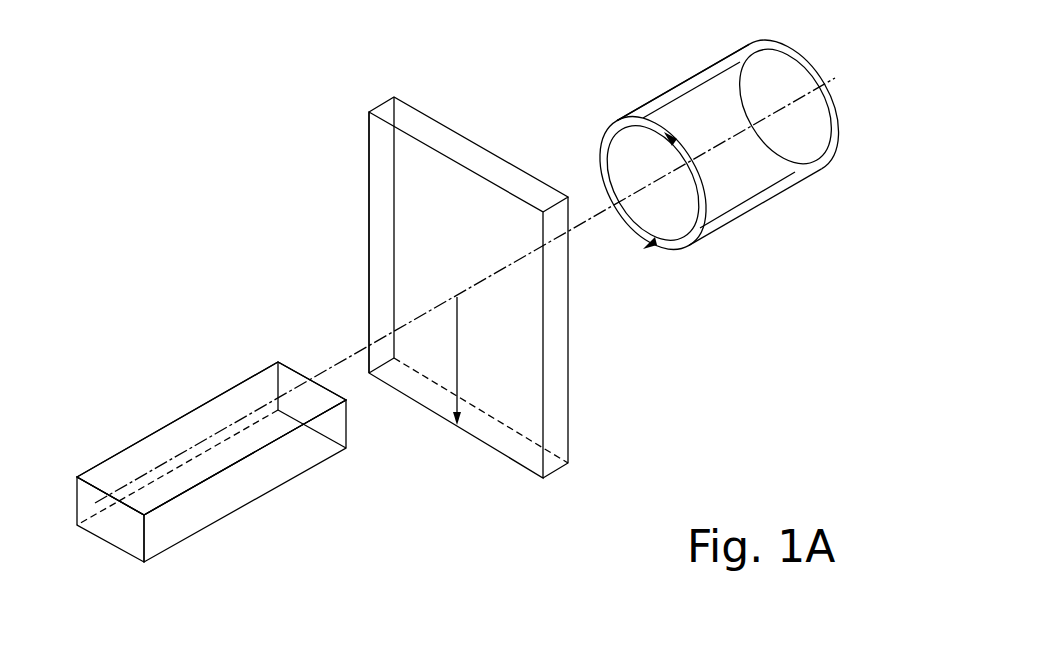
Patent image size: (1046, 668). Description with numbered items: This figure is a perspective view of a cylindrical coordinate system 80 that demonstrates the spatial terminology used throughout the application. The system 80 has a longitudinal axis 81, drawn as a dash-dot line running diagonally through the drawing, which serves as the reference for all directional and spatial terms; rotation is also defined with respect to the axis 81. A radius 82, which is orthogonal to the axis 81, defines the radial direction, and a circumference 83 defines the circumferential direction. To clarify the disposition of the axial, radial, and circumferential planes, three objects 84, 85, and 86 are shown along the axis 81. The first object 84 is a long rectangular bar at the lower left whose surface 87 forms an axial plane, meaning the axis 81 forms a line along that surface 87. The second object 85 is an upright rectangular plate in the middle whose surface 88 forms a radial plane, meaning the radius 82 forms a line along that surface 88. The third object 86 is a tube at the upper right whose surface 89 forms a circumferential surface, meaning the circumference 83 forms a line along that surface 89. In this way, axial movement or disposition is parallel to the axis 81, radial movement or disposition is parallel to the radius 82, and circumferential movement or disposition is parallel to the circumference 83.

The cylindrical coordinate system 80 is at (318, 155).
The longitudinal axis 81 is at (832, 97).
The radius 82 is at (457, 352).
The circumference 83 is at (598, 143).
The object 84 is at (173, 548).
The object 85 is at (586, 473).
The object 86 is at (752, 223).
The surface 87 is at (167, 442).
The surface 88 is at (382, 240).
The surface 89 is at (682, 80).